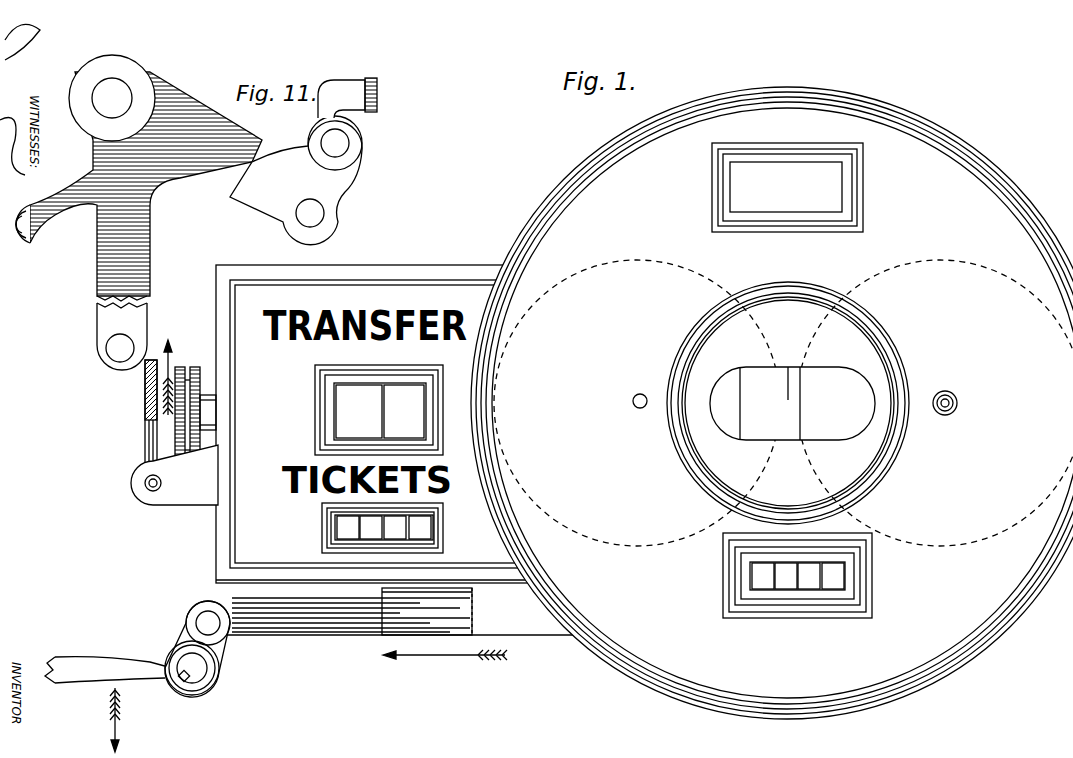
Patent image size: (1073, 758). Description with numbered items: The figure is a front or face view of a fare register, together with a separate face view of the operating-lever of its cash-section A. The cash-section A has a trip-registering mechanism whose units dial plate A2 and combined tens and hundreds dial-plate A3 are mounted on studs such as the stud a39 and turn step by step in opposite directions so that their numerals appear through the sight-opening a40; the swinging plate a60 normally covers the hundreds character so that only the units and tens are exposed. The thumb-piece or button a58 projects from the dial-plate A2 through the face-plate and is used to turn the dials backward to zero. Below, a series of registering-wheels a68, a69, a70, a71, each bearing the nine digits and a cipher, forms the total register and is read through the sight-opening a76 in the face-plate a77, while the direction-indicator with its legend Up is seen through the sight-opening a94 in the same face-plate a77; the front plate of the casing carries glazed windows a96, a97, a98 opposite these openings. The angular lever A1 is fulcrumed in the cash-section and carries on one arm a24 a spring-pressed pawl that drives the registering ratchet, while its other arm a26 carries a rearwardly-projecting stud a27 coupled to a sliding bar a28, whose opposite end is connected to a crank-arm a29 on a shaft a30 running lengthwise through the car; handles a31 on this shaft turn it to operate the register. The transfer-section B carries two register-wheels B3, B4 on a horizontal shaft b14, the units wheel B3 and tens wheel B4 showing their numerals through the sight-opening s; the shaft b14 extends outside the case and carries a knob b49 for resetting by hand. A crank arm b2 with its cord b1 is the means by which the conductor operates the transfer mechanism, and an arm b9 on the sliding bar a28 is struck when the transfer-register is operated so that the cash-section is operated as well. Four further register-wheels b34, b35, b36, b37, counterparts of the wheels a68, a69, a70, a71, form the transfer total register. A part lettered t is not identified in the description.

In FIG. 1, the cash-section A is at (772, 386).
In FIG. 11, the angular lever A1 is at (139, 175).
In FIG. 1, the units dial plate A2 is at (955, 262).
In FIG. 1, the combined tens and hundreds dial-plate A3 is at (578, 272).
In FIG. 1, the transfer-section B is at (396, 408).
In FIG. 1, the units register-wheel B3 is at (392, 388).
In FIG. 1, the tens register-wheel B4 is at (343, 388).
In FIG. 1, the sight-opening s is at (331, 410).
In FIG. 1, the ticket counter window t is at (336, 527).
In FIG. 11, the arm a24 is at (303, 161).
In FIG. 11, the arm a26 is at (148, 258).
In FIG. 11, the pin or stud a27 is at (117, 348).
In FIG. 1, the sliding bar a28 is at (418, 607).
In FIG. 1, the crank-arm a29 is at (221, 668).
In FIG. 1, the shaft a30 is at (190, 678).
In FIG. 1, the lever-arms or handles a31 is at (101, 660).
In FIG. 1, the stud or pintle a39 is at (637, 405).
In FIG. 1, the sight-opening a40 is at (828, 388).
In FIG. 1, the thumb-piece or button a58 is at (958, 403).
In FIG. 1, the swinging plate a60 is at (727, 388).
In FIG. 1, the units register-wheel a68 is at (840, 586).
In FIG. 1, the tens register-wheel a69 is at (810, 586).
In FIG. 1, the hundreds register-wheel a70 is at (787, 586).
In FIG. 1, the thousands register-wheel a71 is at (760, 586).
In FIG. 1, the sight-opening a76 is at (846, 585).
In FIG. 1, the face-plate a77 is at (928, 217).
In FIG. 1, the sight-opening a94 is at (840, 198).
In FIG. 1, the glazed window a96 is at (898, 462).
In FIG. 1, the glazed window a97 is at (865, 207).
In FIG. 1, the glazed window a98 is at (728, 578).
In FIG. 1, the cord or rope b1 is at (146, 402).
In FIG. 1, the lever or crank arm b2 is at (174, 475).
In FIG. 1, the arm b9 is at (472, 589).
In FIG. 1, the horizontal shaft b14 is at (206, 412).
In FIG. 1, the units register-wheel b34 is at (441, 519).
In FIG. 1, the tens register-wheel b35 is at (440, 540).
In FIG. 1, the hundreds register-wheel b36 is at (334, 520).
In FIG. 1, the thousands register-wheel b37 is at (334, 541).
In FIG. 1, the knob or button b49 is at (181, 365).